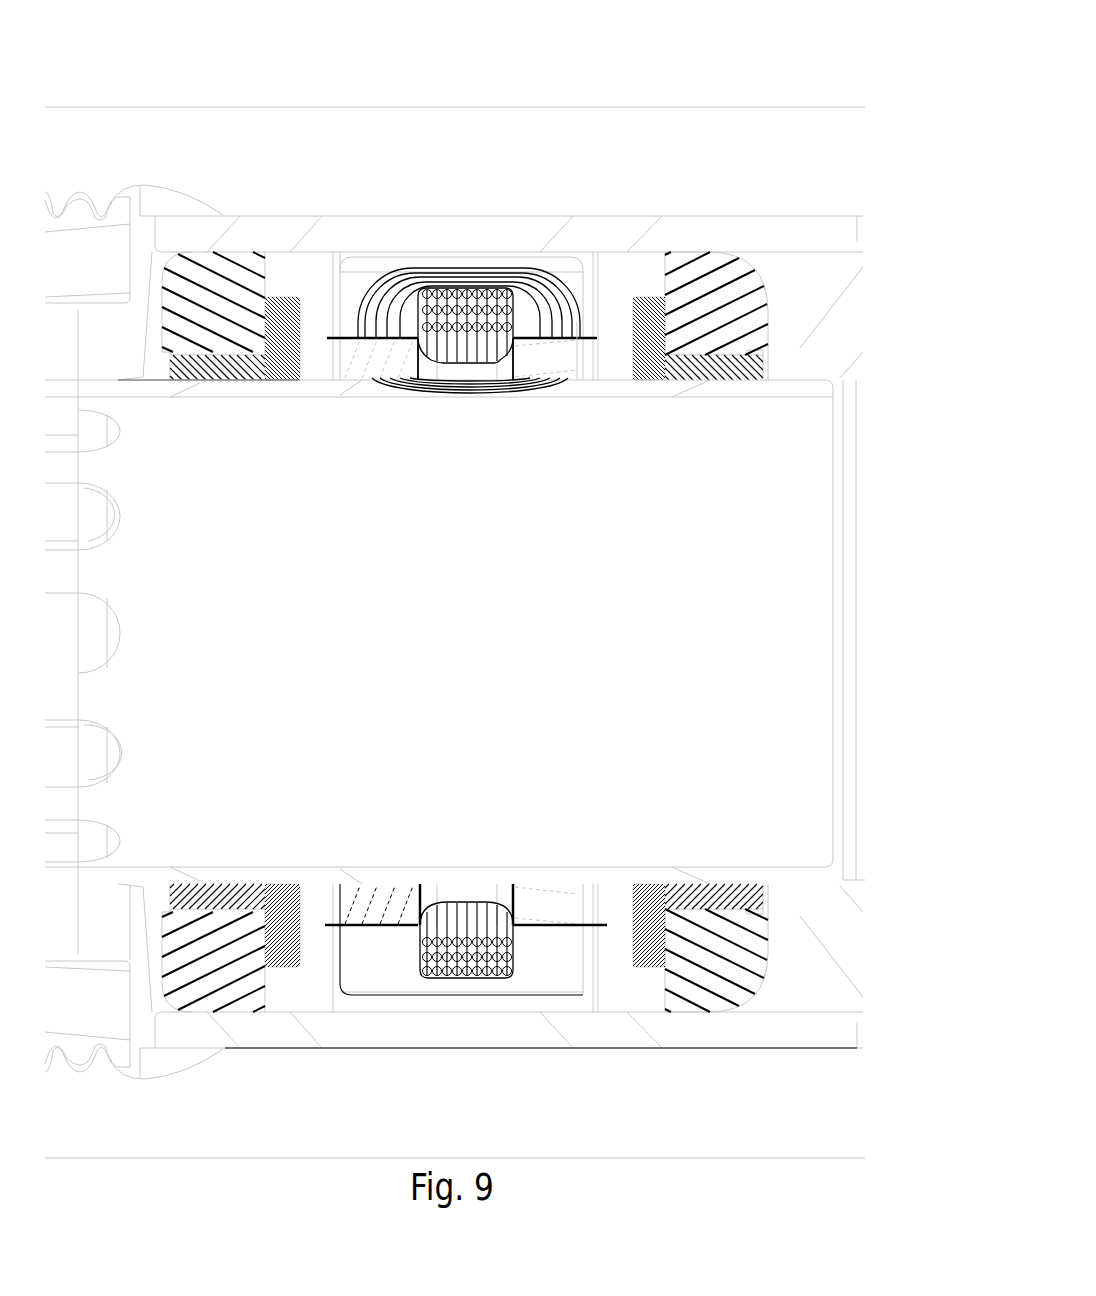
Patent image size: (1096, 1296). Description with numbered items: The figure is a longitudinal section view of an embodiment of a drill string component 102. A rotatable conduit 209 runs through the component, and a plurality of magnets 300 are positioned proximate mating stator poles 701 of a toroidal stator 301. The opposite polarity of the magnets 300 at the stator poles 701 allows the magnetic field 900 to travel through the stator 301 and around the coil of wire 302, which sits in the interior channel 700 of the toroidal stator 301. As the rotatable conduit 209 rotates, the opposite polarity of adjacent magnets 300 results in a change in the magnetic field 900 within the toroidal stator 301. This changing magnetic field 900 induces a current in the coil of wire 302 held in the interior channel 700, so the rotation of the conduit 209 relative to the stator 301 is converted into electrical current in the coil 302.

The drill string component 102 is at (705, 100).
The rotatable conduit 209 is at (724, 395).
The magnets 300 is at (583, 370).
The toroidal stator 301 is at (462, 240).
The coil of wire 302 is at (487, 977).
The interior channel 700 is at (455, 920).
The stator poles 701 is at (583, 340).
The magnetic field 900 is at (553, 282).